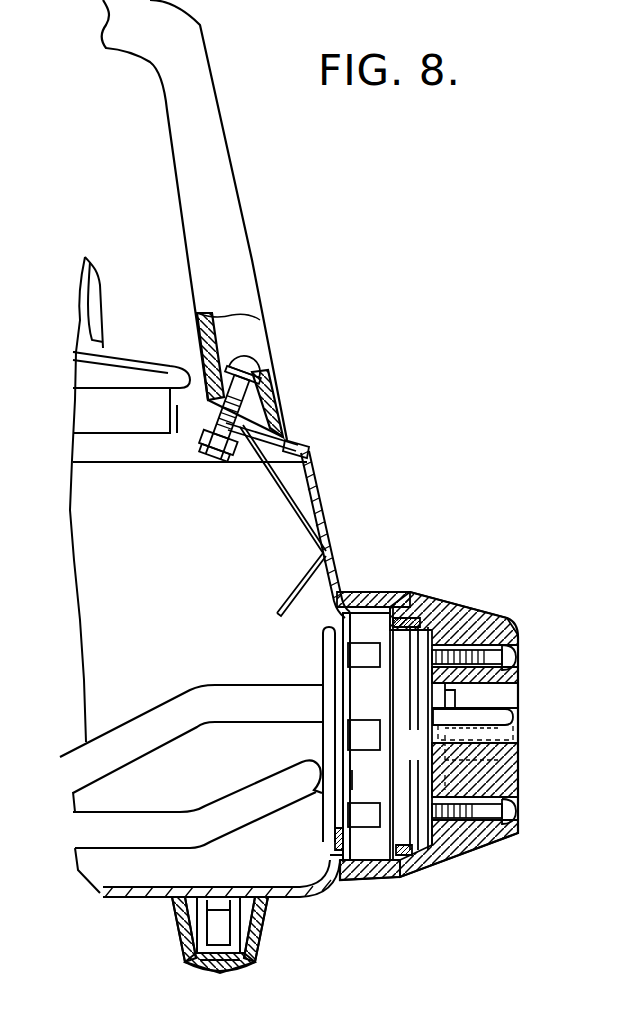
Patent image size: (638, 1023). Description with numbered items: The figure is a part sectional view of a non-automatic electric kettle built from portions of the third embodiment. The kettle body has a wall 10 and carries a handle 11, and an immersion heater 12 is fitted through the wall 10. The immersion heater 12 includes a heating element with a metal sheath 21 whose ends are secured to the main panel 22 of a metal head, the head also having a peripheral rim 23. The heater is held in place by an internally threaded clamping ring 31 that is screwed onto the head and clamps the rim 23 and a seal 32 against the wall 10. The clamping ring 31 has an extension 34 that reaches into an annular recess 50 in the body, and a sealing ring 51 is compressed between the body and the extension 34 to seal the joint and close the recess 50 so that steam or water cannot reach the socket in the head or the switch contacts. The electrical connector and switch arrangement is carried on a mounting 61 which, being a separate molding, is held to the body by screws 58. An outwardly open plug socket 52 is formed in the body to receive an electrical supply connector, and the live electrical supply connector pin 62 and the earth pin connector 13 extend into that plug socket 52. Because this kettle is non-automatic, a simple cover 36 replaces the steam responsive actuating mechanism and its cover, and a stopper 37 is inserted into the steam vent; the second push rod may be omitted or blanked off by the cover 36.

The wall 10 is at (325, 505).
The handle 11 is at (227, 233).
The immersion heater 12 is at (148, 712).
The earth pin connector 13 is at (520, 728).
The metal sheath 21 is at (148, 825).
The main panel 22 is at (320, 672).
The peripheral rim 23 is at (330, 843).
The clamping ring 31 is at (380, 791).
The seal 32 is at (337, 856).
The extension 34 is at (403, 853).
The cover 36 is at (480, 627).
The stopper 37 is at (300, 444).
The annular recess 50 is at (430, 620).
The sealing ring 51 is at (405, 610).
The plug socket 52 is at (500, 703).
The screws 58 is at (513, 657).
The mounting 61 is at (427, 815).
The live electrical supply connector pin 62 is at (478, 737).